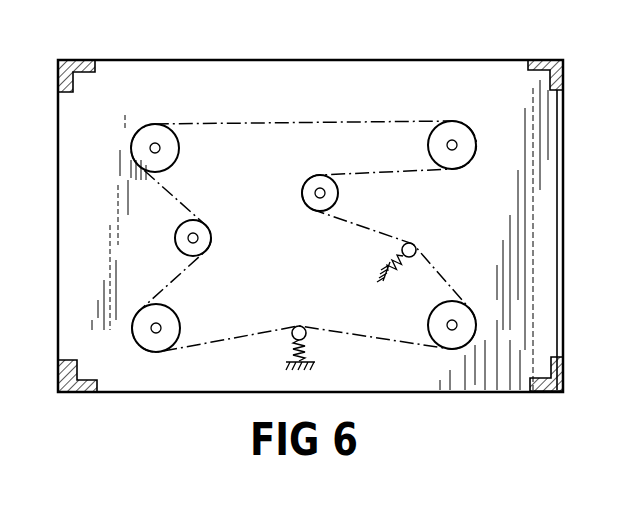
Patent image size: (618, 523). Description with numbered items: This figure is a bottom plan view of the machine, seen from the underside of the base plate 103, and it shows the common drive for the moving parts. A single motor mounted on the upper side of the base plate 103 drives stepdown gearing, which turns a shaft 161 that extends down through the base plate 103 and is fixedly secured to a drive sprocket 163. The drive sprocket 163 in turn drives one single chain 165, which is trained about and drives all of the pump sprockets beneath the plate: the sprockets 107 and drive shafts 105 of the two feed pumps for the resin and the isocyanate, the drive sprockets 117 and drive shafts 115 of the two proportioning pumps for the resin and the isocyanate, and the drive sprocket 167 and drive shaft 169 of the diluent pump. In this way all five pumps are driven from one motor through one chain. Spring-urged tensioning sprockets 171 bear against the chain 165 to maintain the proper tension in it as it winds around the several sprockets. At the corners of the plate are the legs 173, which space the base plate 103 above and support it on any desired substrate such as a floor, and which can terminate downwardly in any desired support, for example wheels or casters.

The base plate 103 is at (256, 72).
The legs 173 is at (76, 67).
The chain 165 is at (270, 123).
The drive shafts 115 is at (152, 143).
The drive sprockets 117 is at (170, 156).
The shaft 161 is at (338, 193).
The drive sprocket 163 is at (302, 193).
The drive sprocket 167 is at (210, 239).
The drive shaft 169 is at (176, 237).
The drive shafts 105 is at (151, 329).
The sprockets 107 is at (174, 320).
The tensioning sprockets 171 is at (416, 250).